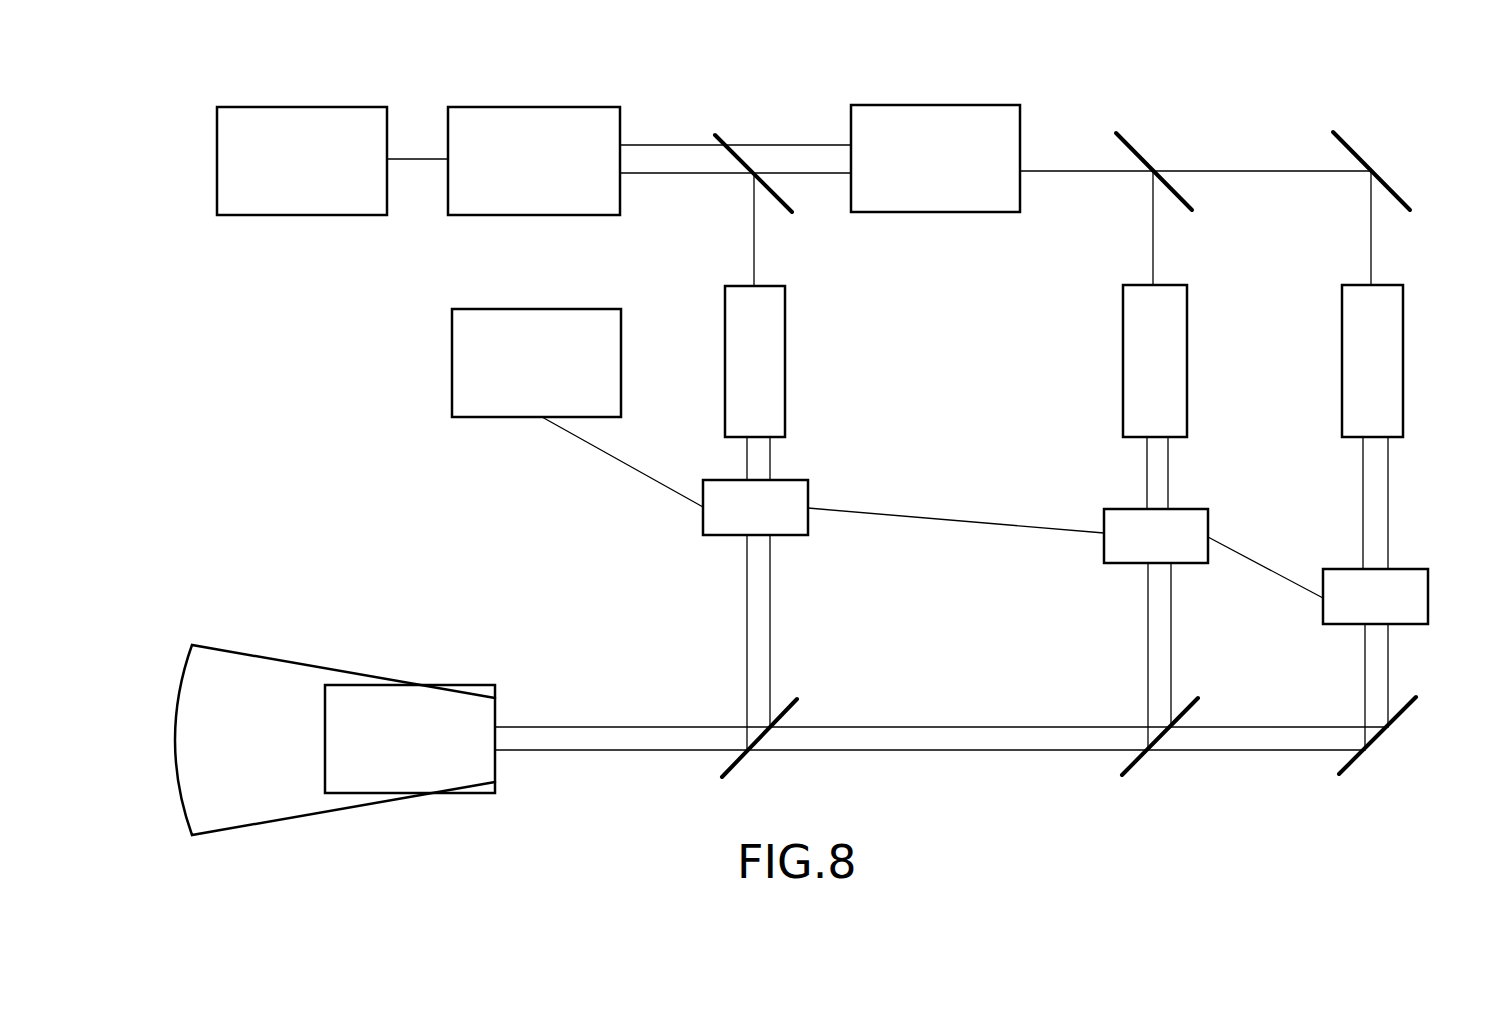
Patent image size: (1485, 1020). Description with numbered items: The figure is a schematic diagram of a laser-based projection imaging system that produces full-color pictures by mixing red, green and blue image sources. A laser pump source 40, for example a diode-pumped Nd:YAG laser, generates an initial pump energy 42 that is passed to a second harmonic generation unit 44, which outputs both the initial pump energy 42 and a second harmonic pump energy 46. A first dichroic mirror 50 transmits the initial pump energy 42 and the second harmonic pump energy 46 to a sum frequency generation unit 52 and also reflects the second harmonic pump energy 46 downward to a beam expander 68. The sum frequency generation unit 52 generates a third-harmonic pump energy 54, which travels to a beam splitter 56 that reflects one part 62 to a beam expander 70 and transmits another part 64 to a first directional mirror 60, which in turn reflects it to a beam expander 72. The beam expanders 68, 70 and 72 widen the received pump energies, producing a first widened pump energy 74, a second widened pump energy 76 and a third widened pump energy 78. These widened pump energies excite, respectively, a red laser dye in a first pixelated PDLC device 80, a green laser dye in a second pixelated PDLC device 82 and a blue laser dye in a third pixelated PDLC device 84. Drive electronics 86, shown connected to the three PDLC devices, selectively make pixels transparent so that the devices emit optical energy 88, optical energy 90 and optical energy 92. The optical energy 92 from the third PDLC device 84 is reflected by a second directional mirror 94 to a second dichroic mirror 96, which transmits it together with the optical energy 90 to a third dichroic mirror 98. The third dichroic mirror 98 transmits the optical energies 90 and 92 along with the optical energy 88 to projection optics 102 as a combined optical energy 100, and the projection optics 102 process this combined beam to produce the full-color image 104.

The laser pump source 40 is at (328, 105).
The initial pump energy 42 is at (393, 159).
The second harmonic generation unit 44 is at (568, 107).
The second harmonic pump energy 46 is at (647, 173).
The first dichroic mirror 50 is at (717, 130).
The sum frequency generation unit 52 is at (962, 105).
The 355 nm pump energy 54 is at (1045, 171).
The beam splitter 56 is at (1133, 143).
The first directional mirror 60 is at (1345, 142).
The reflected part of the 355 nm pump energy 62 is at (1153, 233).
The transmitted part of the 355 nm pump energy 64 is at (1371, 230).
The beam expander 68 is at (785, 342).
The beam expander 70 is at (1187, 348).
The beam expander 72 is at (1403, 348).
The first widened pump energy 74 is at (770, 452).
The second widened pump energy 76 is at (1168, 475).
The third widened pump energy 78 is at (1388, 510).
The first pixelated PDLC device 80 is at (793, 537).
The second pixelated PDLC device 82 is at (1192, 565).
The third pixelated PDLC device 84 is at (1428, 607).
The drive electronics 86 is at (621, 367).
The optical energy 88 is at (770, 635).
The optical energy 90 is at (1171, 635).
The optical energy 92 is at (1388, 658).
The second directional mirror 94 is at (1348, 767).
The second dichroic mirror 96 is at (1130, 767).
The third dichroic mirror 98 is at (733, 767).
The combined optical energy 100 is at (560, 752).
The projection optics 102 is at (475, 793).
The full-color image 104 is at (235, 823).